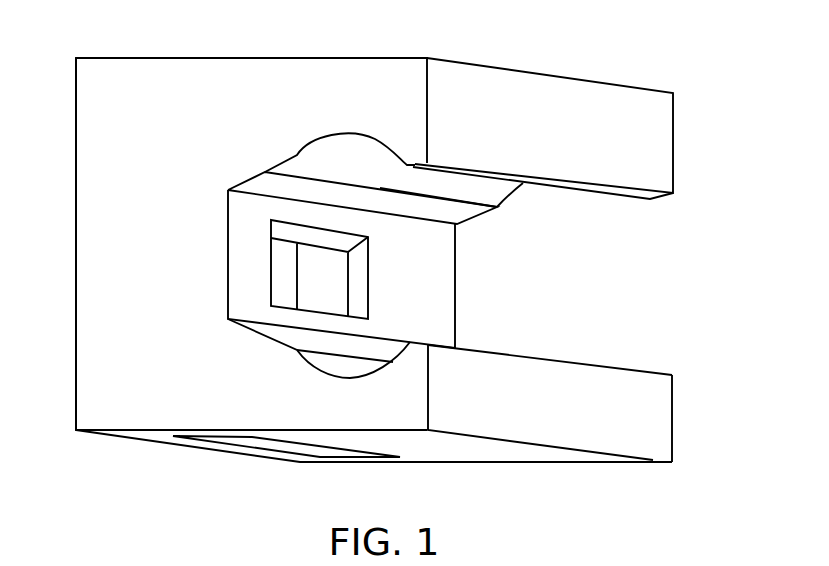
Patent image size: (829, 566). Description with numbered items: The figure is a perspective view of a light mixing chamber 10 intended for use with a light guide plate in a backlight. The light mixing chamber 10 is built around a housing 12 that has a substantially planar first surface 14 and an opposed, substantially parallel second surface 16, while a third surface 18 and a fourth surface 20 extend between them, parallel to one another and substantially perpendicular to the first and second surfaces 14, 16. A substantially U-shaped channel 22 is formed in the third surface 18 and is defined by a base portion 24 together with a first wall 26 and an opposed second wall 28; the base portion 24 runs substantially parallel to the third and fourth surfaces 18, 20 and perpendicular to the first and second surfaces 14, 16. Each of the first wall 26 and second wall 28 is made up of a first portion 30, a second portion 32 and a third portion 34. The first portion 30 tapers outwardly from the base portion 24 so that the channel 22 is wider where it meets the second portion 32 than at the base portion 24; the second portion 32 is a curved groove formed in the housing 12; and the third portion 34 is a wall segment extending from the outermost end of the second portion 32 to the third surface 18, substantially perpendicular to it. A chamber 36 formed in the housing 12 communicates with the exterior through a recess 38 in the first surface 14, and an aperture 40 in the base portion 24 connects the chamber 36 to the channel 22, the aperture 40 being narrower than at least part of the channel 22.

The light mixing chamber 10 is at (706, 144).
The housing 12 is at (147, 120).
The first surface 14 is at (490, 455).
The second surface 16 is at (288, 57).
The third surface 18 is at (571, 416).
The fourth surface 20 is at (76, 383).
The channel 22 is at (614, 328).
The base portion 24 is at (264, 260).
The first wall 26 is at (532, 196).
The second wall 28 is at (533, 349).
The first portion 30 is at (255, 187).
The second portion 32 is at (333, 134).
The third portion 34 is at (417, 168).
The chamber 36 is at (280, 290).
The recess 38 is at (268, 439).
The aperture 40 is at (328, 312).